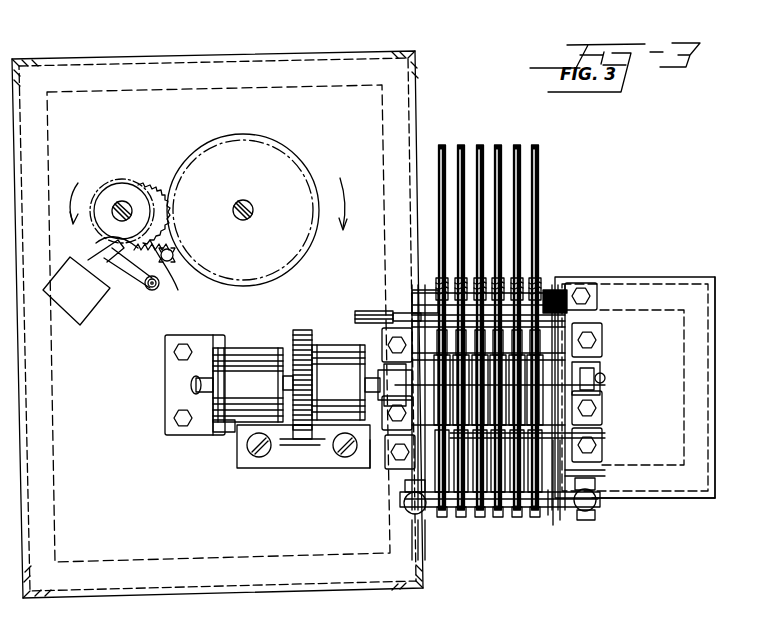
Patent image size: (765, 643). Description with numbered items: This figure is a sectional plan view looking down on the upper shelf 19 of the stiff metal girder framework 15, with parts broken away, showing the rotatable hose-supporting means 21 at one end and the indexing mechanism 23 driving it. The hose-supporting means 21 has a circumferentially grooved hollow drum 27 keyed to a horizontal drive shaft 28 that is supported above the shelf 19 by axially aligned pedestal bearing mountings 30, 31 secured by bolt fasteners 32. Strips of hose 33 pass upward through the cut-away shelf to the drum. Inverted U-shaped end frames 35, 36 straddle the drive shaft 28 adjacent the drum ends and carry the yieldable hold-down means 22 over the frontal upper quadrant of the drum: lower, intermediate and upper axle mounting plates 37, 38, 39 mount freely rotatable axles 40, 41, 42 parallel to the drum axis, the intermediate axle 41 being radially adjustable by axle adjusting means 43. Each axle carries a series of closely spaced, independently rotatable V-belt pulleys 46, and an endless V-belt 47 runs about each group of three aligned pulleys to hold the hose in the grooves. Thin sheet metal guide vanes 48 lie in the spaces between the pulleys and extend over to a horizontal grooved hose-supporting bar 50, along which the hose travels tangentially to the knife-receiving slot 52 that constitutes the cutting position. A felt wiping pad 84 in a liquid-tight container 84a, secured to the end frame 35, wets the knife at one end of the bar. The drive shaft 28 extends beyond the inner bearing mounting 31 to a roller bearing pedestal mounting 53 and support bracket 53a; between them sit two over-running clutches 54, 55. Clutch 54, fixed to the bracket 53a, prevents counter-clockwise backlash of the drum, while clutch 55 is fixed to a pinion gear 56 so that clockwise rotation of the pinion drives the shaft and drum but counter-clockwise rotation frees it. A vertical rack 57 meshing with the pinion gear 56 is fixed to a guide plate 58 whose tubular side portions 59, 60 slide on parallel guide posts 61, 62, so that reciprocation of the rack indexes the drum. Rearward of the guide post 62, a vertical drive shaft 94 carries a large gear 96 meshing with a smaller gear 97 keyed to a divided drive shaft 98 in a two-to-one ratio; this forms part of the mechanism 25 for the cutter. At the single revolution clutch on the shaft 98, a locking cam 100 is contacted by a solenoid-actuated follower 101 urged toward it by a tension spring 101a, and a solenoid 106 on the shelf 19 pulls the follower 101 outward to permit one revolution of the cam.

The girder framework 15 is at (716, 357).
The upper shelf 19 is at (680, 492).
The hose-supporting means 21 is at (565, 250).
The yieldable hold-down means 22 is at (523, 535).
The indexing mechanism 23 is at (276, 505).
The mechanism for effecting reciprocating movement 25 is at (152, 137).
The hollow drum 27 is at (527, 275).
The drive shaft 28 is at (605, 376).
The bearing mounting 30 is at (596, 386).
The inner bearing mounting 31 is at (385, 366).
The bolt fasteners 32 is at (600, 450).
The strips of hose 33 is at (465, 144).
The end frame 35 is at (412, 292).
The end frame 36 is at (565, 292).
The lower axle mounting plate 37 is at (586, 520).
The intermediate axle mounting plate 38 is at (600, 474).
The upper axle mounting plate 39 is at (604, 400).
The lower axle 40 is at (558, 520).
The intermediate axle 41 is at (550, 525).
The upper axle 42 is at (575, 372).
The axle adjusting means 43 is at (404, 505).
The V-belt pulleys 46 is at (470, 512).
The endless V-belt 47 is at (520, 512).
The guide vanes 48 is at (605, 434).
The hose-supporting bar 50 is at (572, 323).
The knife-receiving slot 52 is at (590, 298).
The roller bearing pedestal mounting 53 is at (167, 395).
The support bracket 53a is at (218, 432).
The over-running clutch 54 is at (234, 430).
The over-running clutch 55 is at (325, 344).
The pinion gear 56 is at (293, 328).
The vertical rack 57 is at (304, 440).
The guide plate 58 is at (302, 460).
The tubular side portion 59 is at (368, 470).
The tubular side portion 60 is at (245, 460).
The guide post 61 is at (345, 458).
The guide post 62 is at (259, 458).
The felt wiping pad 84 is at (375, 312).
The liquid-tight container 84a is at (380, 312).
The vertical drive shaft 94 is at (250, 203).
The large gear 96 is at (288, 145).
The smaller gear 97 is at (128, 178).
The divided drive shaft 98 is at (130, 203).
The locking cam 100 is at (94, 186).
The solenoid-actuated follower 101 is at (133, 284).
The tension spring 101a is at (168, 284).
The solenoid 106 is at (85, 317).